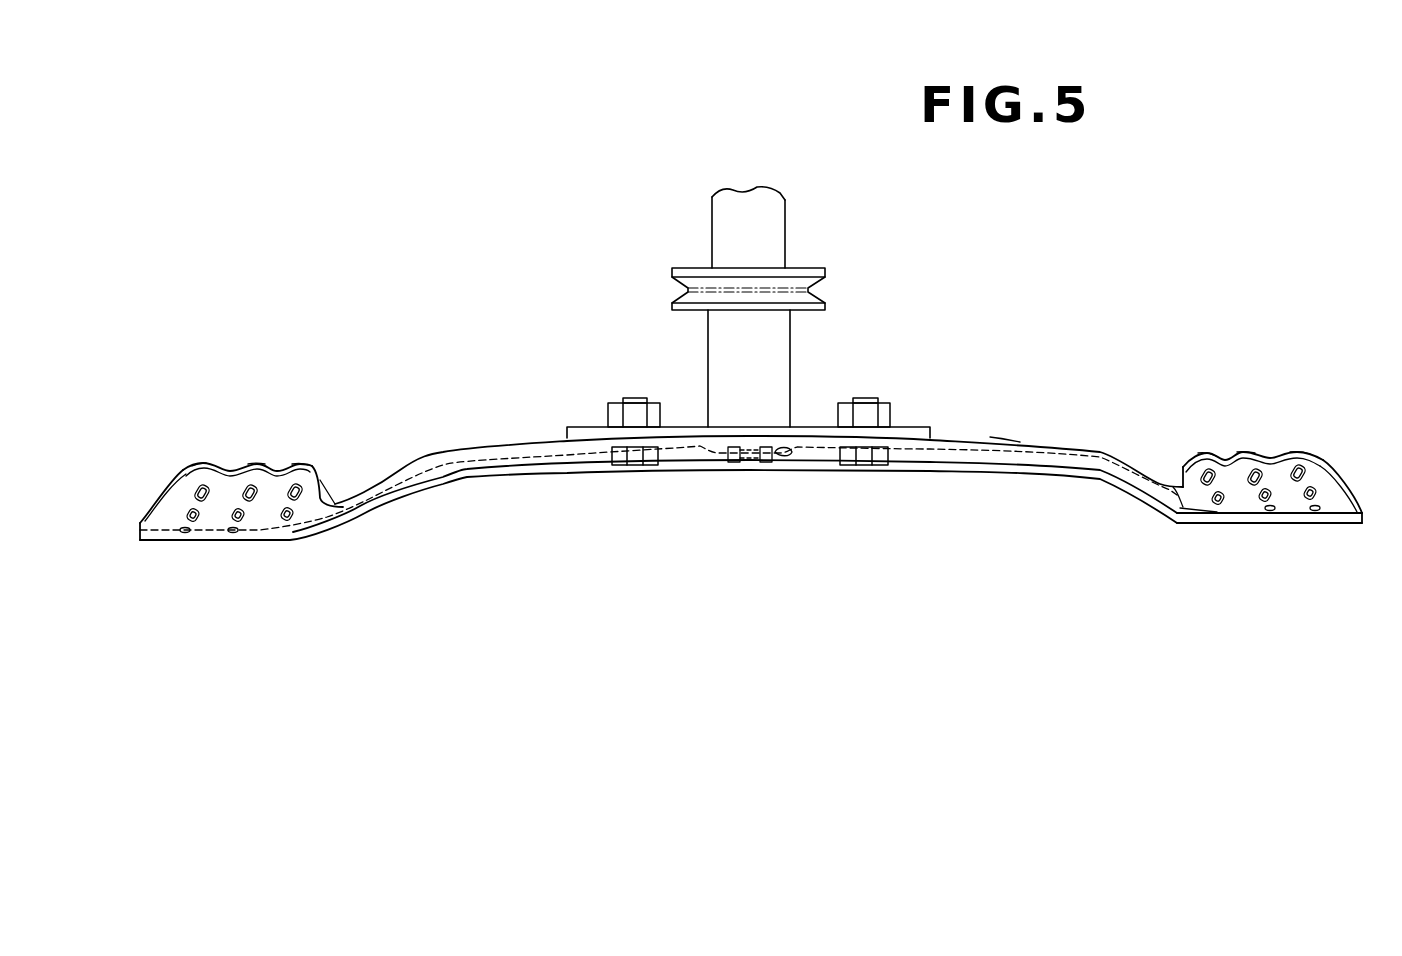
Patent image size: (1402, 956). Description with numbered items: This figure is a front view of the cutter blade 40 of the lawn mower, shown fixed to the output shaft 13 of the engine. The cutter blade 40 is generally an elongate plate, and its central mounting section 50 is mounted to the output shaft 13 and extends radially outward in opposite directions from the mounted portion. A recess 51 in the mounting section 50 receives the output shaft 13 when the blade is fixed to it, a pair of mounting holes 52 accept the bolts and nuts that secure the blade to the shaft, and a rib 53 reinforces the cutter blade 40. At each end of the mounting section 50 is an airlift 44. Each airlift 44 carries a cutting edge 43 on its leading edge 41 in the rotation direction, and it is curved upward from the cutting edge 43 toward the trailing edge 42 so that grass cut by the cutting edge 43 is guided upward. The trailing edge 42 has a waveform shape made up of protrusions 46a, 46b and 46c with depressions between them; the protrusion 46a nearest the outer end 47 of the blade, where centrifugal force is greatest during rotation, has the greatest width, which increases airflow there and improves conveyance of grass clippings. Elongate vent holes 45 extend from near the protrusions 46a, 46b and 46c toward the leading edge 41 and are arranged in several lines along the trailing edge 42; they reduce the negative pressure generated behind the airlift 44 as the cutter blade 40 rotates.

The output shaft 13 is at (790, 345).
The cutter blade 40 is at (470, 290).
The leading edge 41 is at (208, 550).
The trailing edge 42 is at (283, 450).
The cutting edge 43 is at (1340, 525).
The airlift 44 is at (320, 498).
The vent holes 45 is at (313, 483).
The protrusion 46a is at (203, 464).
The protrusion 46b is at (257, 464).
The protrusion 46c is at (302, 465).
The outer end 47 is at (160, 497).
The mounting section 50 is at (578, 455).
The recess 51 is at (777, 465).
The mounting holes 52 is at (618, 437).
The rib 53 is at (990, 437).